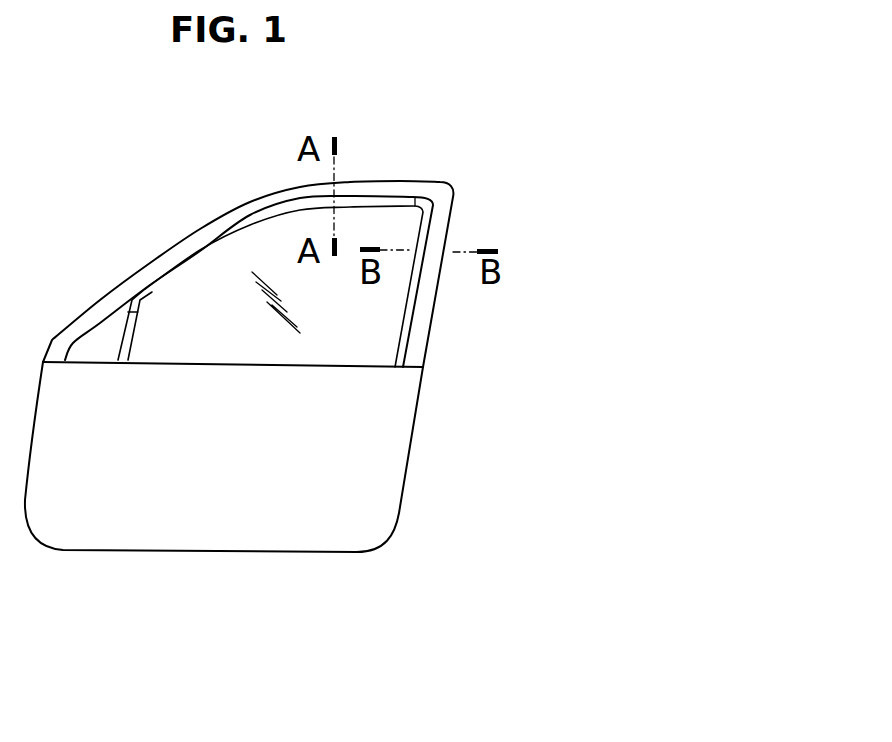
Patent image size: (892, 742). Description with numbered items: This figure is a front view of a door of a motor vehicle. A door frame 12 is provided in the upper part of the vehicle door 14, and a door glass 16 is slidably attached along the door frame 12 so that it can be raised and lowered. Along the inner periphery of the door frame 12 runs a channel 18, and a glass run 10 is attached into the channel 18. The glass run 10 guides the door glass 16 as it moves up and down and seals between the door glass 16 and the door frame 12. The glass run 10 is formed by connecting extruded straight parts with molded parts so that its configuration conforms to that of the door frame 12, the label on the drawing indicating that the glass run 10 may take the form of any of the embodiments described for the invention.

The glass run 10 is at (392, 195).
The door frame 12 is at (222, 218).
The vehicle door 14 is at (377, 467).
The door glass 16 is at (377, 312).
The channel 18 is at (280, 207).